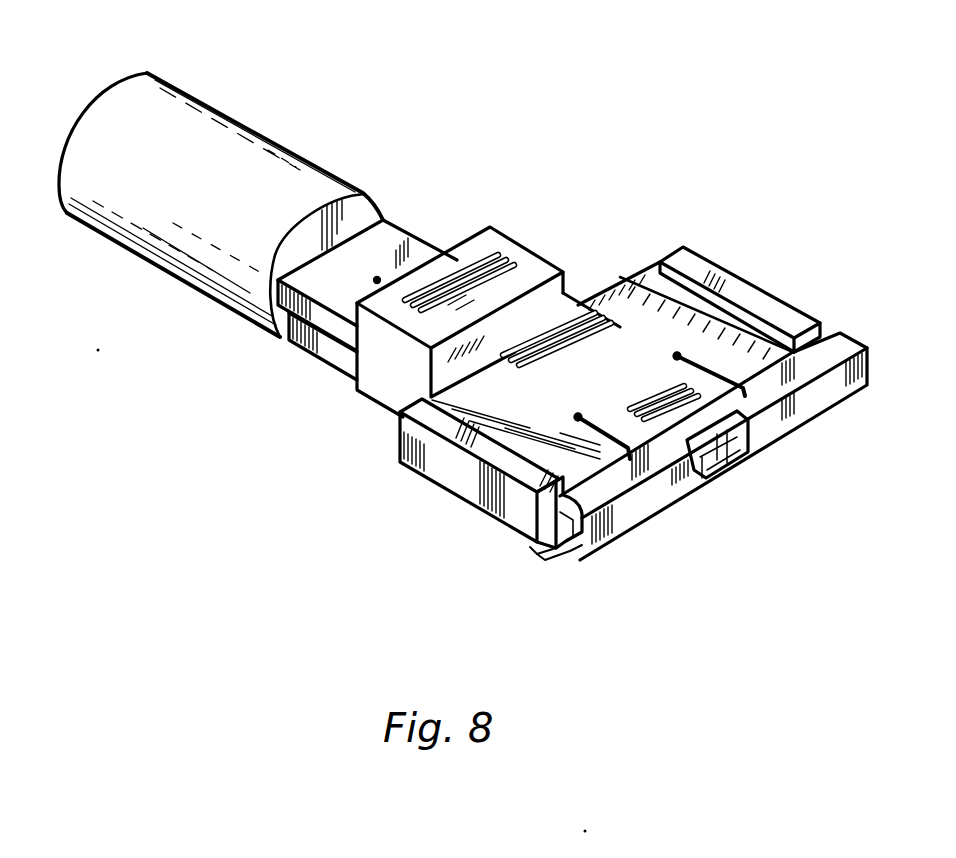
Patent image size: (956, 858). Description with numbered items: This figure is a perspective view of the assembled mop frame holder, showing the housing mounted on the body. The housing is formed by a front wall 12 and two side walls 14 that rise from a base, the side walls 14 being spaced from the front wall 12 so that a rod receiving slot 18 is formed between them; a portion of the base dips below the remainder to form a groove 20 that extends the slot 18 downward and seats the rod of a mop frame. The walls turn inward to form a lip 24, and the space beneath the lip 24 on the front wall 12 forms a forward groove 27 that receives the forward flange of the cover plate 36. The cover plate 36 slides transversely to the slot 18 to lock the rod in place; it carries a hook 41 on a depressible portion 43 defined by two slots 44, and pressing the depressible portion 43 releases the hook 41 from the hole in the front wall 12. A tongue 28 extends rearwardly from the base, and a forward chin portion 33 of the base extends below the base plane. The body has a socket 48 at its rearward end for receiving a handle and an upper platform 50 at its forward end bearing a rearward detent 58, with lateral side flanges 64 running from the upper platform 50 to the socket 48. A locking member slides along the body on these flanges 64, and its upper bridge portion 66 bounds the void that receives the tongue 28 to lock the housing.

The front wall 12 is at (807, 408).
The side walls 14 is at (470, 478).
The rod receiving slot 18 is at (830, 324).
The groove 20 is at (526, 550).
The lip 24 is at (764, 310).
The forward groove 27 is at (540, 554).
The tongue 28 is at (558, 306).
The forward chin portion 33 is at (539, 557).
The cover plate 36 is at (622, 297).
The hook 41 is at (731, 463).
The depressible portion 43 is at (651, 392).
The slots 44 is at (706, 354).
The socket 48 is at (227, 148).
The upper platform 50 is at (413, 253).
The rearward detent 58 is at (378, 276).
The lateral side flanges 64 is at (333, 343).
The upper bridge portion 66 is at (508, 240).